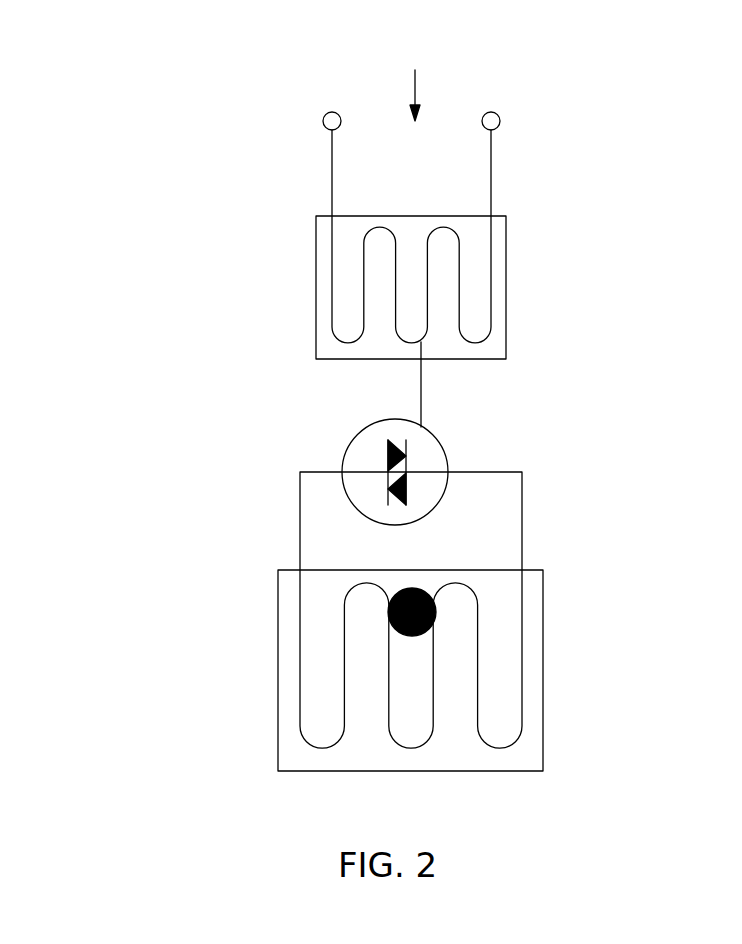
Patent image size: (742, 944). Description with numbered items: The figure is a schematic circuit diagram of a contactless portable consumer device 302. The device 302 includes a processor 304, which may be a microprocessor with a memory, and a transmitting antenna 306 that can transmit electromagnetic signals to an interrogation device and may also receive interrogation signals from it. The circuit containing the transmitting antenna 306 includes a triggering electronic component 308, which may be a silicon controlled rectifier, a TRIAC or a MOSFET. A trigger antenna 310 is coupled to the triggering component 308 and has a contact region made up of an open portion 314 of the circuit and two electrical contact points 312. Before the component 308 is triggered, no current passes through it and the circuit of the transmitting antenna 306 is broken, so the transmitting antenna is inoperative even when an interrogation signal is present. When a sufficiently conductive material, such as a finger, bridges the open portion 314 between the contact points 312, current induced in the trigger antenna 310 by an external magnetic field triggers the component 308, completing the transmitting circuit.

The contactless portable consumer device 302 is at (172, 343).
The processor 304 is at (536, 581).
The transmitting antenna 306 is at (294, 621).
The triggering electronic component 308 is at (502, 457).
The trigger antenna 310 is at (507, 278).
The electrical contact points 312 is at (447, 91).
The open portion 314 is at (428, 77).